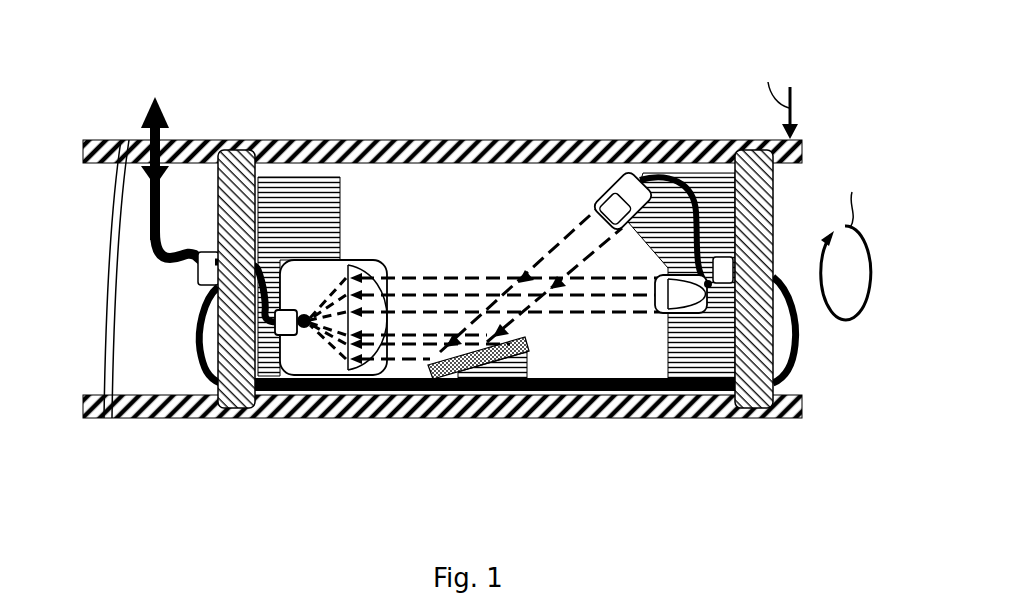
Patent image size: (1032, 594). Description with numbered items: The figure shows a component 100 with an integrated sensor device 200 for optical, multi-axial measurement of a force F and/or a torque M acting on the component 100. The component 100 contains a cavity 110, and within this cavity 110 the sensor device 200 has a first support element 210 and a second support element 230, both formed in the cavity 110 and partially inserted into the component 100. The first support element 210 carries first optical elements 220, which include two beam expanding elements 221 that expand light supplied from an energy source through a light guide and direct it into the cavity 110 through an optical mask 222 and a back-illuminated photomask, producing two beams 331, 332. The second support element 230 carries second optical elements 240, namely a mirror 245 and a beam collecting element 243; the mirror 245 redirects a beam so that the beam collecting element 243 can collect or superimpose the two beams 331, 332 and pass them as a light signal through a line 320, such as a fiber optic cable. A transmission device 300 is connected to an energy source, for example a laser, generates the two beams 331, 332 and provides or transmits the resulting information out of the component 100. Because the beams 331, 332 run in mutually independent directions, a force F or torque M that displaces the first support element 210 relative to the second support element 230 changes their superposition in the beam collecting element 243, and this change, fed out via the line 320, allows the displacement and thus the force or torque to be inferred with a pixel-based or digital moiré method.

The component 100 is at (185, 58).
The cavity 110 is at (160, 331).
The sensor device 200 is at (494, 353).
The first support element 210 is at (762, 330).
The first optical elements 220 is at (634, 340).
The beam expanding element 221 is at (637, 232).
The optical mask 222 is at (603, 232).
The second support element 230 is at (238, 418).
The second optical elements 240 is at (402, 385).
The beam collecting element 243 is at (318, 368).
The mirror 245 is at (462, 366).
The transmission device 300 is at (570, 70).
The line 320 is at (162, 200).
The beam 331 is at (443, 268).
The beam 332 is at (551, 228).